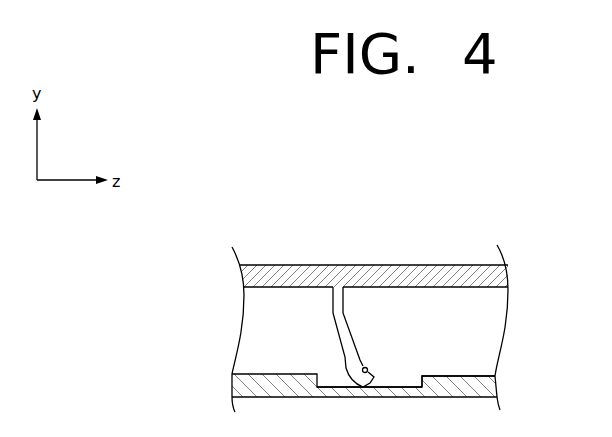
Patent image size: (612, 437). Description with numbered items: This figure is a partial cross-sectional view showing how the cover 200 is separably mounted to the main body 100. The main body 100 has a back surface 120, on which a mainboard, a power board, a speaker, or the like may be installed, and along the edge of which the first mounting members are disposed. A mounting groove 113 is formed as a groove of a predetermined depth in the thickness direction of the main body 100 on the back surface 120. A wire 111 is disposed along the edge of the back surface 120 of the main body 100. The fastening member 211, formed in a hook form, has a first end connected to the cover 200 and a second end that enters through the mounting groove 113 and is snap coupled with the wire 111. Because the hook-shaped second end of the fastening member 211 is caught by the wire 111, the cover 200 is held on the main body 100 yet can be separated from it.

The main body 100 is at (496, 391).
The mounting groove 113 is at (401, 385).
The back surface 120 is at (467, 375).
The cover 200 is at (474, 265).
The fastening member 211 is at (333, 314).
The wire 111 is at (368, 362).